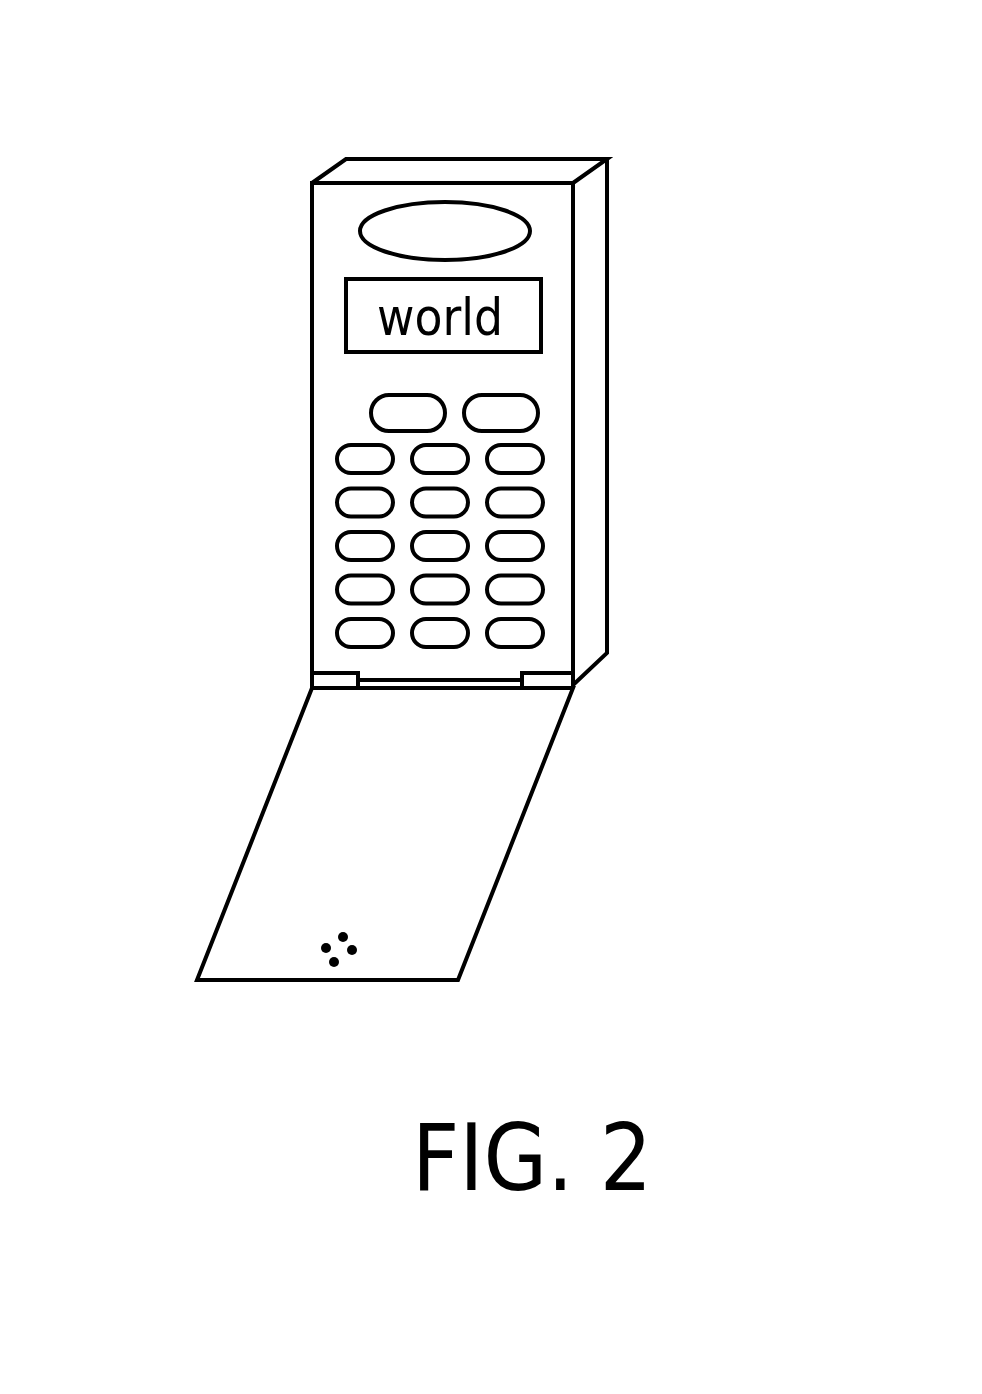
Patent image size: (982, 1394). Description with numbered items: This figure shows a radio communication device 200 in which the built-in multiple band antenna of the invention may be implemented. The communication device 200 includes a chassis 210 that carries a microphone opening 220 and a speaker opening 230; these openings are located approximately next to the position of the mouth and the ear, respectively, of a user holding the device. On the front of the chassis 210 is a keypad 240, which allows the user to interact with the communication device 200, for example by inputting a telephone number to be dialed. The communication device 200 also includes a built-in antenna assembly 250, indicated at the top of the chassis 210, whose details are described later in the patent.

The radio communication device 200 is at (240, 215).
The chassis 210 is at (630, 345).
The microphone opening 220 is at (288, 938).
The speaker opening 230 is at (454, 217).
The keypad 240 is at (572, 547).
The built-in antenna assembly 250 is at (576, 143).